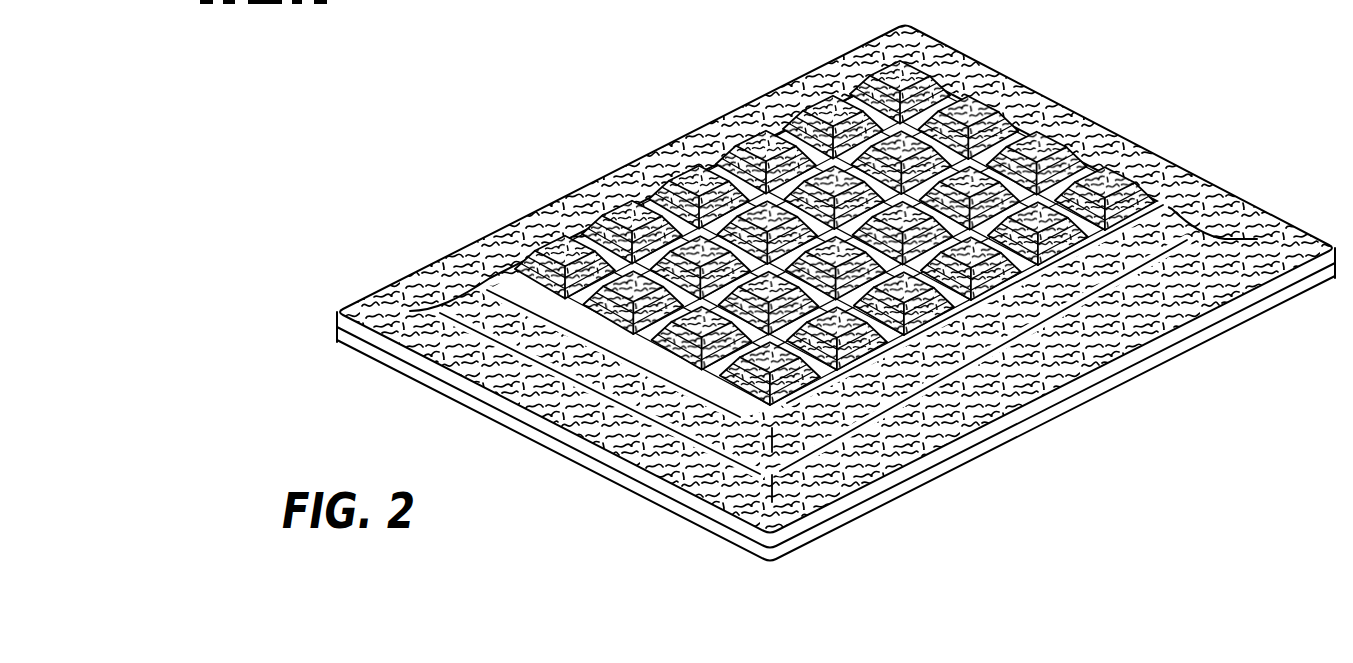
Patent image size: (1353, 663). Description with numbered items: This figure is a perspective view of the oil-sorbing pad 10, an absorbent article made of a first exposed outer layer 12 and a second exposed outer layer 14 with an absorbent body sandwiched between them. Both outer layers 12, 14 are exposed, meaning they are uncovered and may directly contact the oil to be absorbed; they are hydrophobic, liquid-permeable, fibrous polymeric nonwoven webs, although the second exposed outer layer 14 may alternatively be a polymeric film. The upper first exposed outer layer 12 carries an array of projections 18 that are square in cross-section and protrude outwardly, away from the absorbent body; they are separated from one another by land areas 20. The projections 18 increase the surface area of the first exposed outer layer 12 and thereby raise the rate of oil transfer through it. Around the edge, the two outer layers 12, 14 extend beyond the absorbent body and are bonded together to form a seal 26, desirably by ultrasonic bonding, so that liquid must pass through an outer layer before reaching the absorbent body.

The oil-sorbing pad 10 is at (821, 284).
The first exposed outer layer 12 is at (513, 233).
The second exposed outer layer 14 is at (1200, 337).
The projections 18 is at (832, 110).
The land areas 20 is at (985, 165).
The seal 26 is at (378, 293).